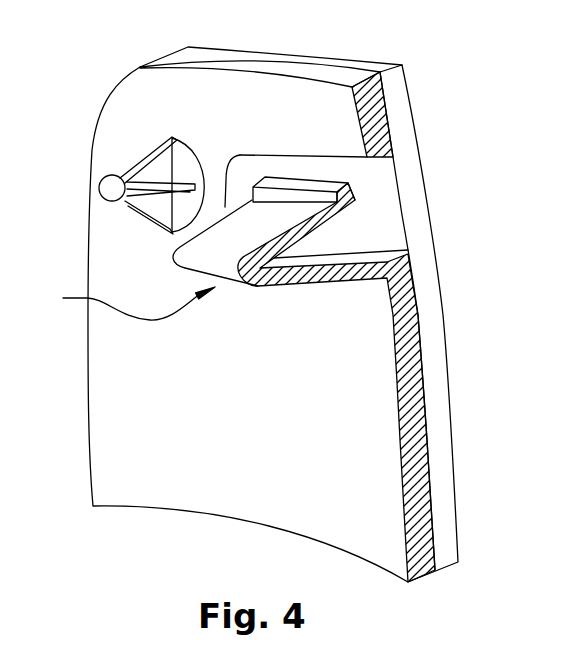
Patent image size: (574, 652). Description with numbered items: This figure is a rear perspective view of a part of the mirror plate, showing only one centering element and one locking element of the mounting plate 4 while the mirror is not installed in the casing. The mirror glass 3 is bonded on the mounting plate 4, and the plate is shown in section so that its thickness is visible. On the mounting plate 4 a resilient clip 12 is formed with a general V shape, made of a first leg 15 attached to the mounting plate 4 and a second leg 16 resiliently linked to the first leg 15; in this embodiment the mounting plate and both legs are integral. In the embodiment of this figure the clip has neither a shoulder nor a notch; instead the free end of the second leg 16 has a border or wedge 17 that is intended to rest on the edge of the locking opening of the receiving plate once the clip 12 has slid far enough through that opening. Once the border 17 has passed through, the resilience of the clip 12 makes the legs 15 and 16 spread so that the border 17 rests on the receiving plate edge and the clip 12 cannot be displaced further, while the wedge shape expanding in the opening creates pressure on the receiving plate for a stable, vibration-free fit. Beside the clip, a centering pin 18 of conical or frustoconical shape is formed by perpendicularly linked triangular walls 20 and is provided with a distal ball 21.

The mirror glass 3 is at (413, 134).
The mounting plate 4 is at (335, 77).
The resilient clip 12 is at (125, 302).
The first leg 15 is at (335, 273).
The second leg 16 is at (282, 220).
The border or wedge 17 is at (337, 220).
The centering pin 18 is at (150, 154).
The triangular wall 20 is at (158, 206).
The distal ball 21 is at (112, 201).